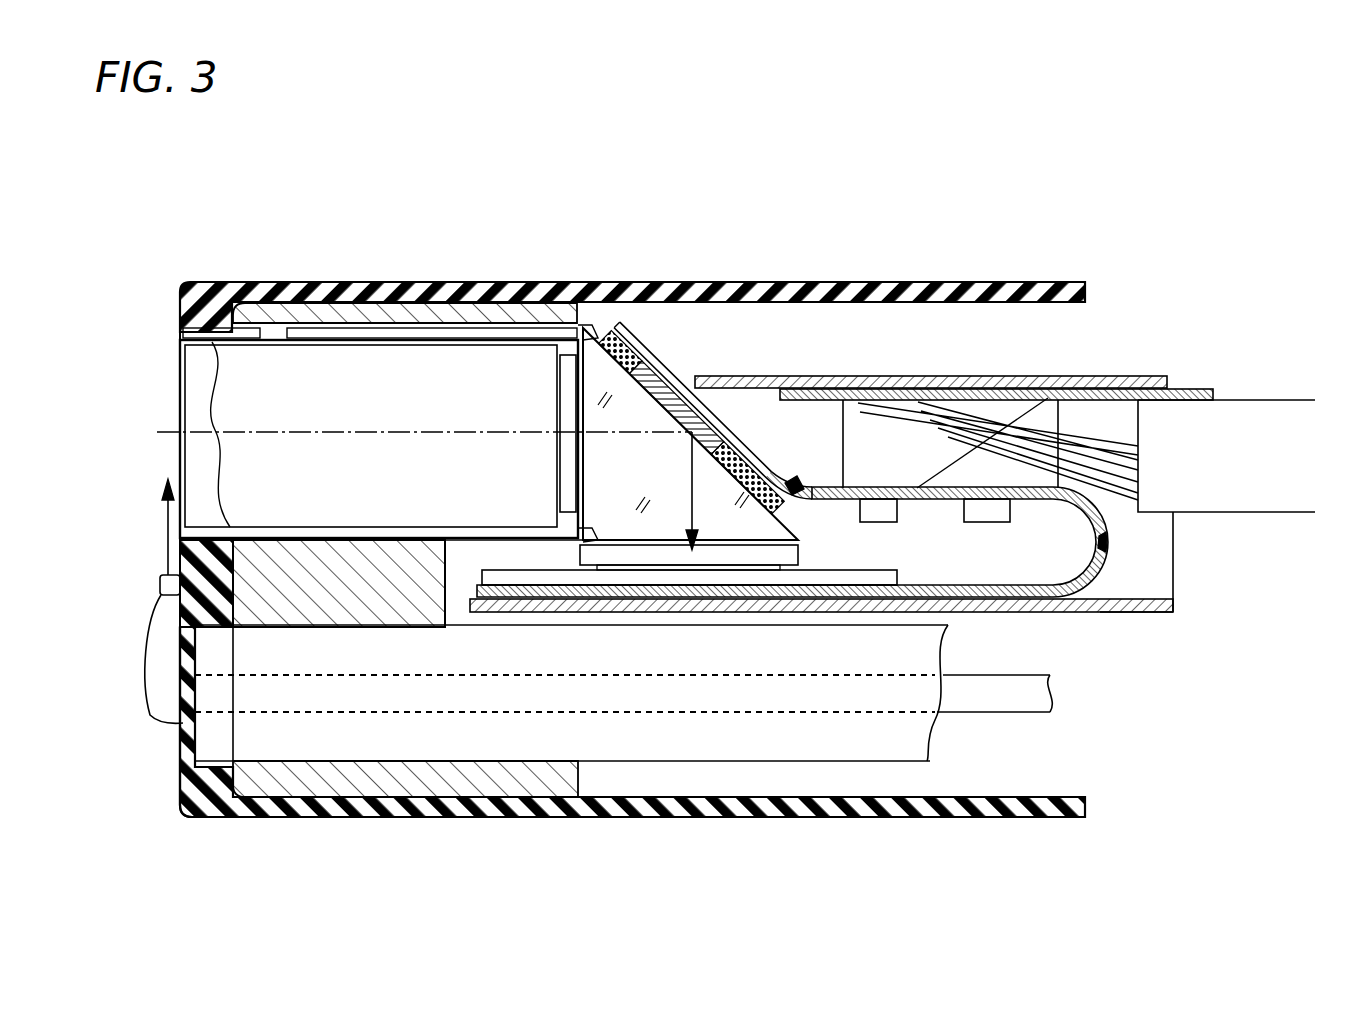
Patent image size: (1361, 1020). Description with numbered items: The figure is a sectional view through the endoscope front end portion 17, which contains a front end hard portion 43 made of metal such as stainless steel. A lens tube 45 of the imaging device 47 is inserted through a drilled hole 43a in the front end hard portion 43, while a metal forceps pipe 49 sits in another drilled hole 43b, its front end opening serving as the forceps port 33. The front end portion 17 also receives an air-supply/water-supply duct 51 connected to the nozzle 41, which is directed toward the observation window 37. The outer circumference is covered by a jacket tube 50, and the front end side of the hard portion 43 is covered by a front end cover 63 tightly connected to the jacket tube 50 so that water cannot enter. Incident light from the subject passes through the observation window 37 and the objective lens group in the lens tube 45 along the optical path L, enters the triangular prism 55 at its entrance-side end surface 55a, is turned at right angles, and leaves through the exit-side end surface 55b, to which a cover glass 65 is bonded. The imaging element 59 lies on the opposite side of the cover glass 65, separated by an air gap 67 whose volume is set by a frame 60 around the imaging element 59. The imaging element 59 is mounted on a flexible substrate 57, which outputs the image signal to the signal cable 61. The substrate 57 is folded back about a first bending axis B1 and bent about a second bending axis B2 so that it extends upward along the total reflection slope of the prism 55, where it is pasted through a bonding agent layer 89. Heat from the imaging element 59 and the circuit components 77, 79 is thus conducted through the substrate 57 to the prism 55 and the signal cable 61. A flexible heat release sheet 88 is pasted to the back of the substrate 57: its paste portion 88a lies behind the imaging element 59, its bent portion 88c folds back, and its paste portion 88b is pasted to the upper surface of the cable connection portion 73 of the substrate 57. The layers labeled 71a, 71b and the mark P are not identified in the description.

The endoscope front end portion 17 is at (632, 474).
The forceps port 33 is at (181, 750).
The observation window 37 is at (181, 370).
The nozzle 41 is at (153, 702).
The front end hard portion 43 is at (343, 607).
The drilled hole 43a is at (345, 325).
The drilled hole 43b is at (405, 775).
The lens tube 45 is at (350, 335).
The imaging device 47 is at (380, 318).
The forceps pipe 49 is at (880, 761).
The jacket tube 50 is at (1048, 284).
The air-supply/water-supply duct 51 is at (1003, 712).
The triangular prism 55 is at (598, 368).
The entrance-side end surface 55a is at (583, 328).
The exit-side end surface 55b is at (735, 550).
The flexible substrate 57 is at (988, 600).
The imaging element 59 is at (807, 585).
The frame 60 is at (588, 573).
The signal cable 61 is at (1255, 398).
The front end cover 63 is at (196, 282).
The cover glass 65 is at (667, 552).
The air gap 67 is at (627, 572).
The outer layer of flexible board 71a is at (892, 490).
The inner layer of flexible board 71b is at (648, 352).
The cable connection portion 73 is at (993, 510).
The circuit component 77 is at (690, 420).
The circuit component 79 is at (1050, 385).
The heat release sheet 88 is at (1175, 620).
The paste portion for the back surface of the imaging element 88a is at (1020, 612).
The paste portion 88b is at (877, 487).
The bent portion 88c is at (1168, 540).
The bonding agent layer 89 is at (792, 480).
The first bending axis B1 is at (1108, 548).
The second bending axis B2 is at (822, 392).
The optical path L is at (171, 431).
The imaging light path P is at (632, 332).